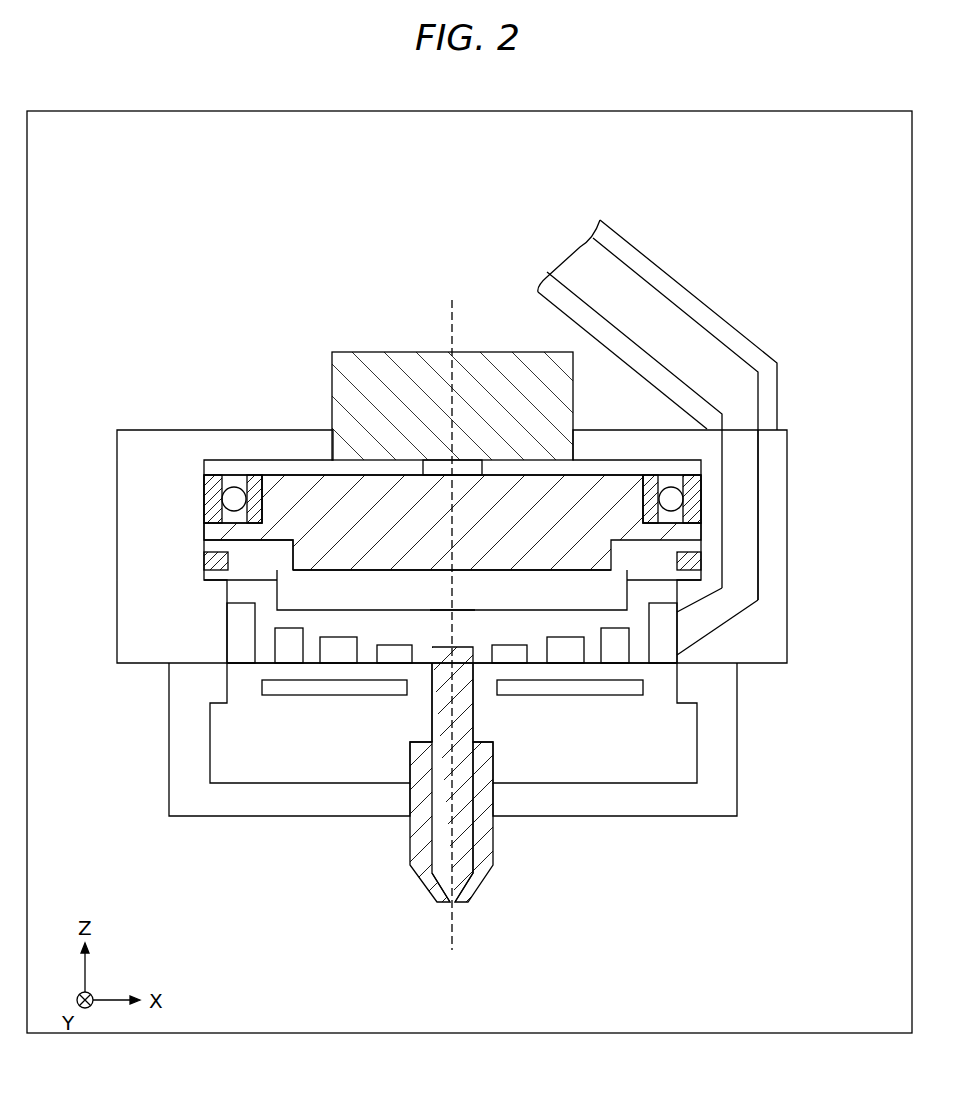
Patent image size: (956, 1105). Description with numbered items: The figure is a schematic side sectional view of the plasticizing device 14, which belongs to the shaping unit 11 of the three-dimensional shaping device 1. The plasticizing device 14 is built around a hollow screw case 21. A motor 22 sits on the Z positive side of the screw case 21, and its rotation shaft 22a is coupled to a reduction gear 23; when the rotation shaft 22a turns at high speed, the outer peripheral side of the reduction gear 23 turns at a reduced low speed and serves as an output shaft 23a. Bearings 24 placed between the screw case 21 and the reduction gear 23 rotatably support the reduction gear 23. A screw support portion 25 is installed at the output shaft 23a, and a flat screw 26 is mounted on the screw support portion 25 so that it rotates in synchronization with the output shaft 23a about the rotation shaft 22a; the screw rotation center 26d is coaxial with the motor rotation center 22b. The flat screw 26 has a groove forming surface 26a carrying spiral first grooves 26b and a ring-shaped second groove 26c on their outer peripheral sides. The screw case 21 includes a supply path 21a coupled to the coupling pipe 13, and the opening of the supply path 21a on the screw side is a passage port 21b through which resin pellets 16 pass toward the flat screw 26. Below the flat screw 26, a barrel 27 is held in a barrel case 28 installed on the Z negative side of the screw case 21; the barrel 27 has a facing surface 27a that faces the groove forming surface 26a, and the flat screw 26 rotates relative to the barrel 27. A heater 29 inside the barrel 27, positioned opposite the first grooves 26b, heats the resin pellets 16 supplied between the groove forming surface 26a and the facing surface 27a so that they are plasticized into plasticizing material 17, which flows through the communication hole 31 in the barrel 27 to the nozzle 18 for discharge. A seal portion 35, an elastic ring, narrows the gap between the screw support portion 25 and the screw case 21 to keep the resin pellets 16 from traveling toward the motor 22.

The three-dimensional shaping device 1 is at (818, 141).
The shaping unit 11 is at (786, 141).
The plasticizing device 14 is at (695, 178).
The coupling pipe 13 is at (690, 297).
The resin pellets 16 is at (725, 362).
The plasticizing material 17 is at (473, 705).
The nozzle 18 is at (415, 855).
The screw case 21 is at (118, 465).
The supply path 21a is at (752, 512).
The passage port 21b is at (728, 638).
The motor 22 is at (358, 370).
The rotation shaft 22a is at (493, 457).
The motor rotation center 22b is at (456, 298).
The reduction gear 23 is at (310, 505).
The output shaft 23a is at (203, 528).
The bearings 24 is at (258, 475).
The screw support portion 25 is at (285, 598).
The flat screw 26 is at (240, 620).
The groove forming surface 26a is at (555, 605).
The first grooves 26b is at (430, 640).
The second groove 26c is at (270, 650).
The screw rotation center 26d is at (455, 640).
The barrel 27 is at (215, 752).
The facing surface 27a is at (395, 560).
The barrel case 28 is at (180, 800).
The heater 29 is at (270, 688).
The communication hole 31 is at (430, 712).
The seal portion 35 is at (203, 555).